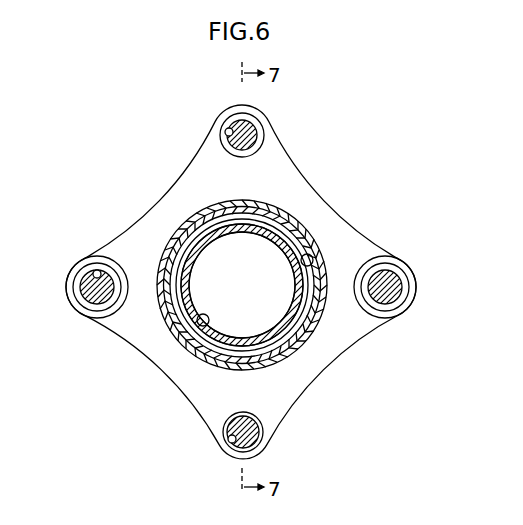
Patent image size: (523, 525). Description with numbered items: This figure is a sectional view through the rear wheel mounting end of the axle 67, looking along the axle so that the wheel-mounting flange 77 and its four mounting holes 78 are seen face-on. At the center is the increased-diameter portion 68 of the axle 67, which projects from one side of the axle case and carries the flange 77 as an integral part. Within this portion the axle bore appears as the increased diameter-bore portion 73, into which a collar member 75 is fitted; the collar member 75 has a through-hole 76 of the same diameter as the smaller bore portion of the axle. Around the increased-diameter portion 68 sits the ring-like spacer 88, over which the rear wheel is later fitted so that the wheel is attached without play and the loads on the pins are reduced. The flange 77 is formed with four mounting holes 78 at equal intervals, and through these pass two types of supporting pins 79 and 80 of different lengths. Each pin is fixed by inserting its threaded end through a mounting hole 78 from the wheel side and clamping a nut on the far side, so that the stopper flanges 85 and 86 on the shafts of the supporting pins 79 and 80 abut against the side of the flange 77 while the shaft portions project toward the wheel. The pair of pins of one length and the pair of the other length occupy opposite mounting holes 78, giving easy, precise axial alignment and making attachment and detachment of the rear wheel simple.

The axle 67 is at (283, 364).
The increased-diameter portion 68 is at (184, 240).
The increased diameter-bore portion 73 is at (295, 247).
The collar member 75 is at (295, 313).
The through-hole 76 is at (204, 322).
The flange 77 is at (303, 183).
The mounting holes 78 is at (226, 131).
The supporting pin 79 is at (258, 132).
The supporting pin 80 is at (415, 292).
The stopper flange 85 is at (221, 157).
The stopper flange 86 is at (101, 321).
The ring-like spacer 88 is at (317, 323).